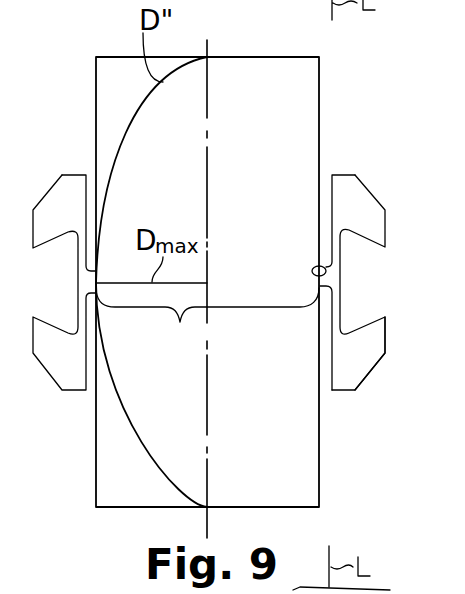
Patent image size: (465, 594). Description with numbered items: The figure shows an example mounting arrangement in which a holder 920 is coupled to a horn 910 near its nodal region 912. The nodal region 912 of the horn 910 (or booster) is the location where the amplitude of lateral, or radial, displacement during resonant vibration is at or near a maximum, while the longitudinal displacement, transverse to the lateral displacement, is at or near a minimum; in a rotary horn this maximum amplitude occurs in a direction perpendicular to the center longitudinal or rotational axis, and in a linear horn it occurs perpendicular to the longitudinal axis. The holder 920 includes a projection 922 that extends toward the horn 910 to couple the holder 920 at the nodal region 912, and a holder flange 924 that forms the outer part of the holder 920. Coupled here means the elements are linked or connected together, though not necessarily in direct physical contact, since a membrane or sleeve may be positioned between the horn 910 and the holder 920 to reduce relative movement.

The horn 910 is at (319, 102).
The nodal region 912 is at (207, 323).
The holder 920 is at (365, 190).
The projection 922 is at (326, 266).
The holder flange 924 is at (385, 333).